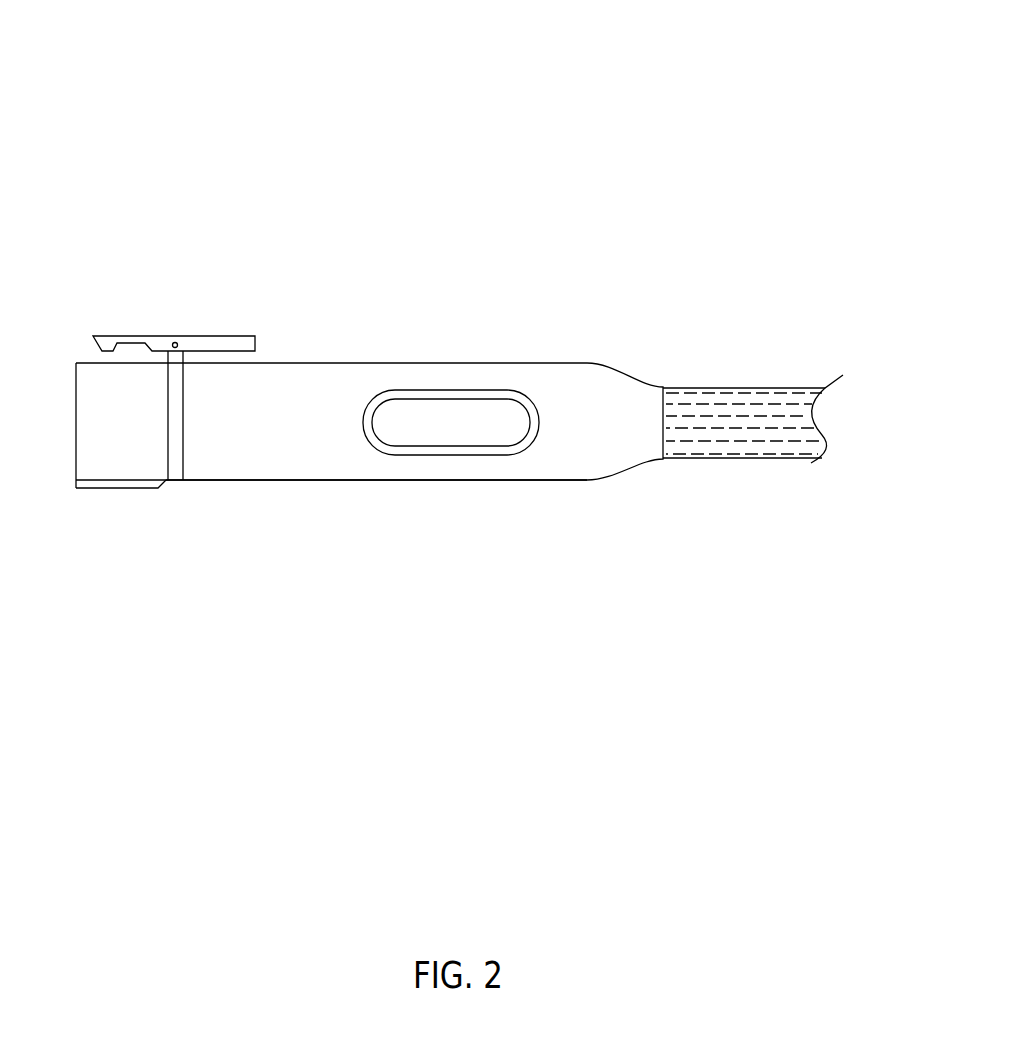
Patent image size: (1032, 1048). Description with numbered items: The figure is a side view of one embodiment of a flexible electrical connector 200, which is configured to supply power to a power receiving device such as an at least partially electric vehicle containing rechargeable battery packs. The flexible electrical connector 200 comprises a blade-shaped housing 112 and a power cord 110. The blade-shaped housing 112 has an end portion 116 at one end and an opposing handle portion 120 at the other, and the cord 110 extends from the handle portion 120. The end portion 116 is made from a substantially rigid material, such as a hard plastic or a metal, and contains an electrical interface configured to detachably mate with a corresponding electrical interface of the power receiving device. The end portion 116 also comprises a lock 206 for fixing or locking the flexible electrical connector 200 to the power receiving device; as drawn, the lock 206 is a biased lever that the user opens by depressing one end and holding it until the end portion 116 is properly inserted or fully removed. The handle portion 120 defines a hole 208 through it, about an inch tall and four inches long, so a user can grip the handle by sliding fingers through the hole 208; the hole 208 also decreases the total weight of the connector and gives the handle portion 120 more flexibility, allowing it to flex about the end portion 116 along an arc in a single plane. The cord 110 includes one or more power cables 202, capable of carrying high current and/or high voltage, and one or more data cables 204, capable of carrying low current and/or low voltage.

The flexible electrical connector 200 is at (515, 120).
The blade-shaped housing 112 is at (308, 375).
The handle portion 120 is at (330, 480).
The end portion 116 is at (128, 475).
The lock 206 is at (210, 345).
The hole 208 is at (453, 421).
The power cord 110 is at (740, 447).
The power cables 202 is at (714, 400).
The data cables 204 is at (760, 425).